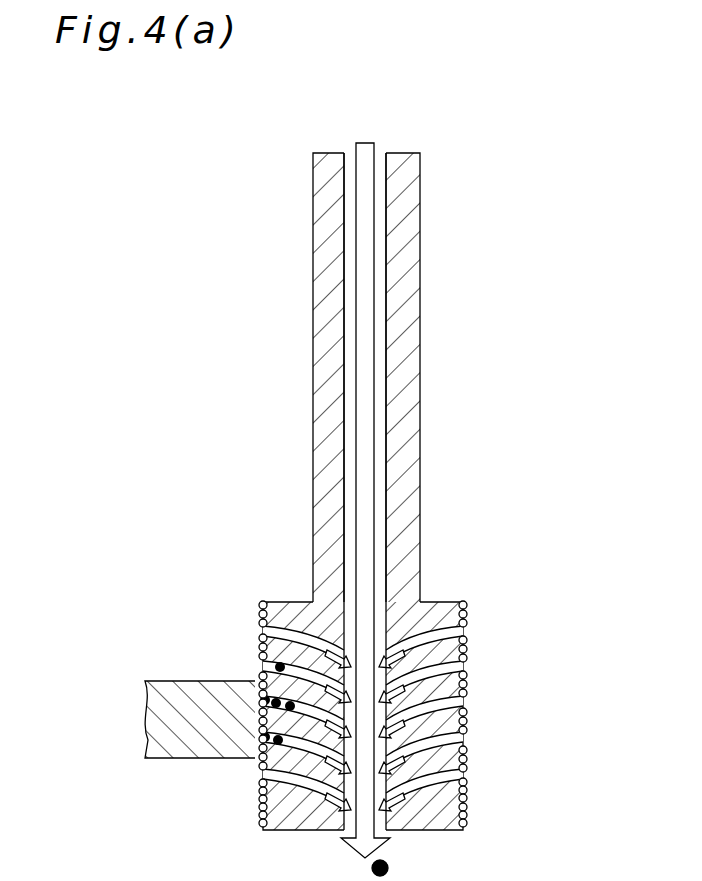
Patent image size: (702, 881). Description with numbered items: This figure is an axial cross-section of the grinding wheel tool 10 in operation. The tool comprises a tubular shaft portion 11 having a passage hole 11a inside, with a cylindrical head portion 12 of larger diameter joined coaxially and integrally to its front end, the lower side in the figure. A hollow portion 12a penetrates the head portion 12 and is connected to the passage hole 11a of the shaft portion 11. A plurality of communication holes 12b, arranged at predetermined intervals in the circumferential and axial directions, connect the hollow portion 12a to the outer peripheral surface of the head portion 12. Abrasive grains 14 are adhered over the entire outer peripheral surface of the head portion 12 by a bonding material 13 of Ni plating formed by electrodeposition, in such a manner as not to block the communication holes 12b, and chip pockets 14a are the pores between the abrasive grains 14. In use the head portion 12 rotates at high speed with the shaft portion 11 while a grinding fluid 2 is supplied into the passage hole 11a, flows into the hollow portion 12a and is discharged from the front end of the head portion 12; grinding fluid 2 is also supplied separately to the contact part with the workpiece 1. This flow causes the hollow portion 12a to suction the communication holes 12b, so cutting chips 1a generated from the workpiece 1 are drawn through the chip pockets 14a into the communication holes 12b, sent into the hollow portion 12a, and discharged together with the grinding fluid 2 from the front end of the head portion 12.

The grinding wheel tool 10 is at (283, 171).
The grinding fluid 2 is at (365, 486).
The shaft portion 11 is at (421, 231).
The passage hole 11a is at (391, 168).
The head portion 12 is at (440, 601).
The hollow portion 12a is at (343, 648).
The communication holes 12b is at (465, 778).
The bonding material 13 is at (472, 649).
The abrasive grains 14 is at (470, 603).
The chip pockets 14a is at (467, 686).
The workpiece 1 is at (178, 681).
The cutting chips 1a is at (388, 867).